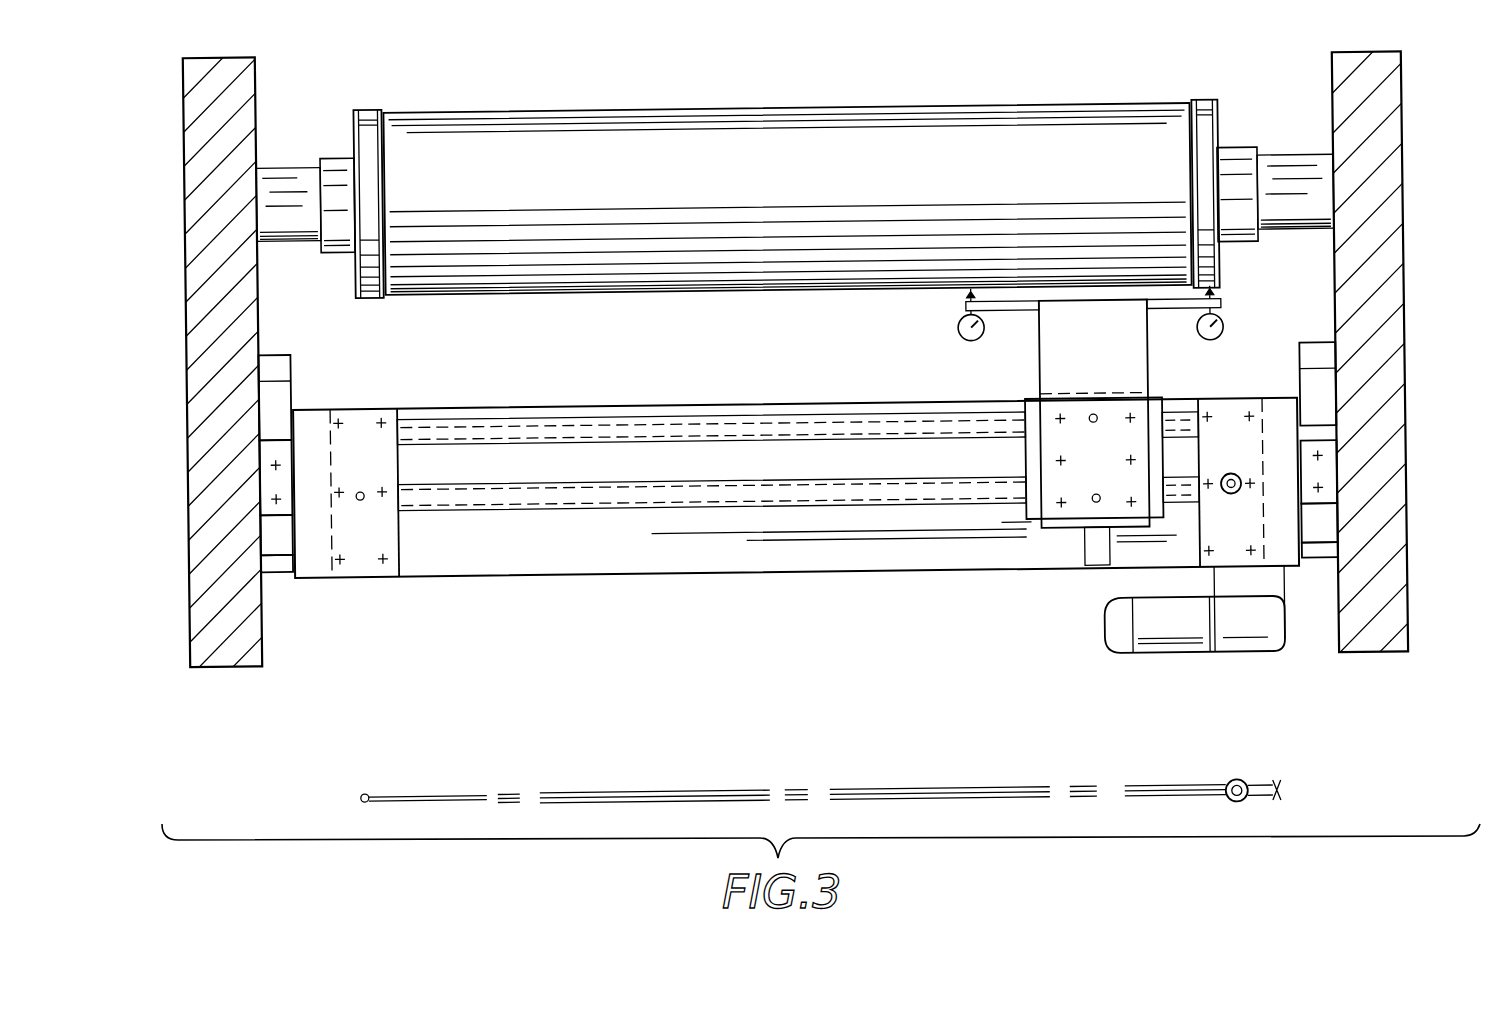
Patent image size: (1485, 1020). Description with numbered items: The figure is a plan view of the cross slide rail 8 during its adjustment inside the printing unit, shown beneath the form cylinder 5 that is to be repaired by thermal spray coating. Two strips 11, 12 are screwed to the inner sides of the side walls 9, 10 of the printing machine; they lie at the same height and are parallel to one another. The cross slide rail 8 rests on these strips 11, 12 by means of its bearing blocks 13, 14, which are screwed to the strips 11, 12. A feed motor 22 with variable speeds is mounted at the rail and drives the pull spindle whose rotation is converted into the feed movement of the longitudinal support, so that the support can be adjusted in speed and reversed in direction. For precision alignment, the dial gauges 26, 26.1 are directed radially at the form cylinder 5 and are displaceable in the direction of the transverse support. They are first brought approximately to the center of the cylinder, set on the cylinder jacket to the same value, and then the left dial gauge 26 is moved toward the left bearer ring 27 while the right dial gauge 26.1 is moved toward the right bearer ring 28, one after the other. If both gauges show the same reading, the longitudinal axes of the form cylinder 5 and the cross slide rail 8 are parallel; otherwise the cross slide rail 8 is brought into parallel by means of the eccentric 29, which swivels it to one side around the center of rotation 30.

The form cylinder 5 is at (615, 109).
The cross slide rail 8 is at (740, 560).
The side wall 9 is at (229, 651).
The side wall 10 is at (1382, 649).
The strip 11 is at (267, 401).
The strip 12 is at (1320, 405).
The bearing block 13 is at (262, 481).
The bearing block 14 is at (1324, 480).
The feed motor 22 is at (1152, 645).
The dial gauge 26 is at (958, 333).
The dial gauge 26.1 is at (1203, 345).
The bearer ring 27 is at (376, 106).
The bearer ring 28 is at (1212, 108).
The eccentric 29 is at (1240, 495).
The center of rotation 30 is at (359, 496).